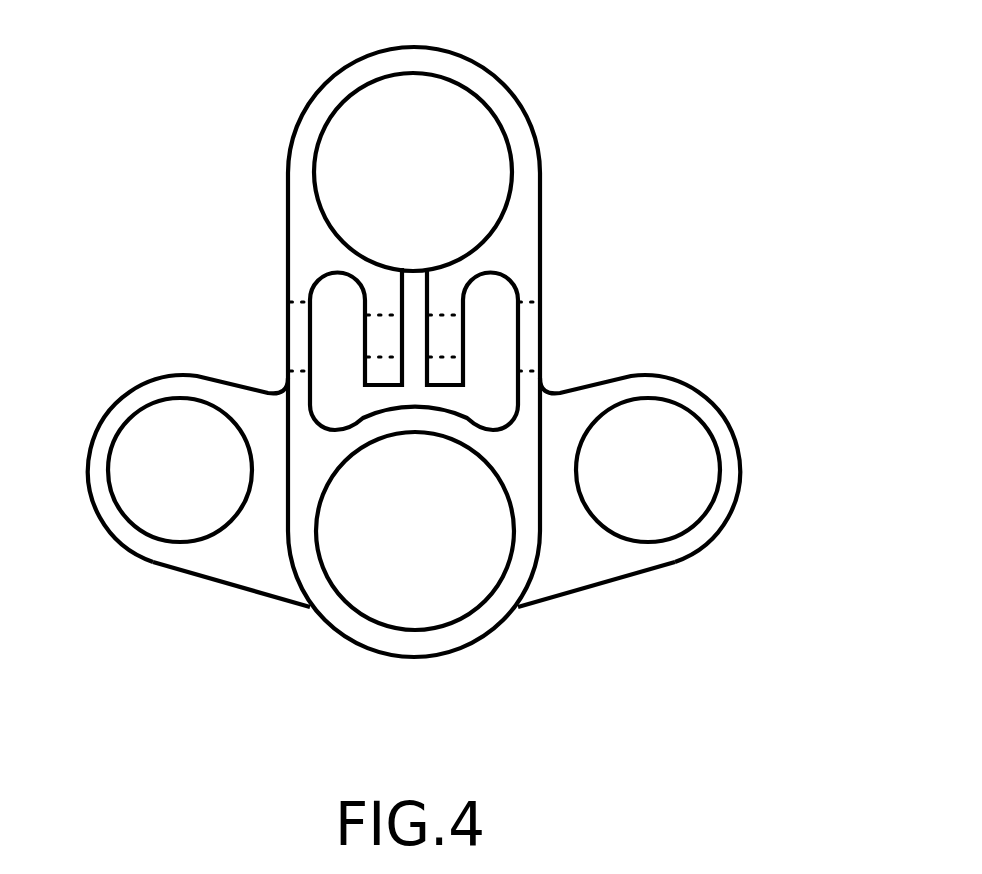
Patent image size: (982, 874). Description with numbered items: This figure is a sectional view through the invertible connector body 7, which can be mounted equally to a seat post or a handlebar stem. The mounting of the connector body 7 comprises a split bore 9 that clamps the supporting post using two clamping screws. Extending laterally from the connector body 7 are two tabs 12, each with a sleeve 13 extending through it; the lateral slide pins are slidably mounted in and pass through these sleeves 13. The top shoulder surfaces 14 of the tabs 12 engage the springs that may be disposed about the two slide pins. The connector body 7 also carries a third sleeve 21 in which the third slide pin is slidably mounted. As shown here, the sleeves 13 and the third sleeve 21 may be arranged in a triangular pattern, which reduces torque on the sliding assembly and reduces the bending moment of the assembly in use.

The invertible connector body 7 is at (545, 213).
The split bore 9 is at (433, 117).
The laterally extending tabs 12 is at (158, 375).
The sleeves 13 is at (177, 483).
The top shoulder surfaces 14 is at (233, 553).
The third sleeve 21 is at (415, 577).